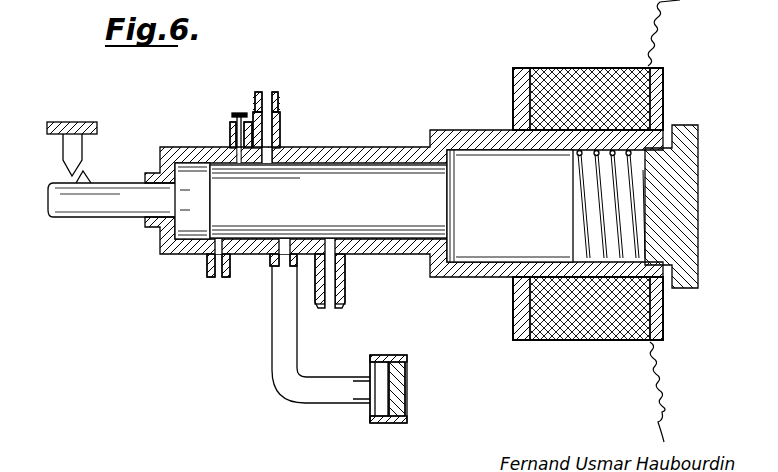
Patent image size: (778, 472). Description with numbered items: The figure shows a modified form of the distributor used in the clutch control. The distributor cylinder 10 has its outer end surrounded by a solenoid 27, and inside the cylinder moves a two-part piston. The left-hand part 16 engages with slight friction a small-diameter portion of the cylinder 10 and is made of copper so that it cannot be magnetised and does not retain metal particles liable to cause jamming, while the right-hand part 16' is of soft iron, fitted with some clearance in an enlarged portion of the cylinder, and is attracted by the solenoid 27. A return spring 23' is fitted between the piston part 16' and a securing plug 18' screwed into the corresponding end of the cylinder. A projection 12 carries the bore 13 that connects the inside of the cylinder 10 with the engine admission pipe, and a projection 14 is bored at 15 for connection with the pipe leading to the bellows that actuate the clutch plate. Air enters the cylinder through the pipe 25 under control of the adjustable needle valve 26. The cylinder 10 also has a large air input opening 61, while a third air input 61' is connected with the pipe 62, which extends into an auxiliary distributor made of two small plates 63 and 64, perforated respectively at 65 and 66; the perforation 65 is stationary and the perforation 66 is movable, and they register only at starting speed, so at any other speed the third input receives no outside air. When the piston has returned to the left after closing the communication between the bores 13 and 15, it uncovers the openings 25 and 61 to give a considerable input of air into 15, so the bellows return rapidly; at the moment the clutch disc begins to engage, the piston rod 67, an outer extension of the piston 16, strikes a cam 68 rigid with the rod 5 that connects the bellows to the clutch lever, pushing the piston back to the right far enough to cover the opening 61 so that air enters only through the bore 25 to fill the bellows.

The rod 5 is at (68, 120).
The cam 68 is at (78, 150).
The piston rod 67 is at (108, 208).
The distributor cylinder 10 is at (348, 148).
The projection 14 is at (278, 128).
The bore 15 is at (268, 92).
The pipe 25 is at (230, 136).
The adjustable needle valve 26 is at (238, 113).
The piston part 16 is at (311, 233).
The piston part 16' is at (510, 235).
The return spring 23' is at (602, 268).
The solenoid 27 is at (575, 68).
The securing plug 18' is at (671, 185).
The air input opening 61 is at (207, 276).
The third air input 61' is at (262, 276).
The pipe 62 is at (272, 349).
The projection 12 is at (345, 285).
The bore 13 is at (335, 309).
The small plate 64 is at (408, 387).
The perforation 65 is at (392, 358).
The perforation 66 is at (407, 412).
The small plate 63 is at (380, 424).